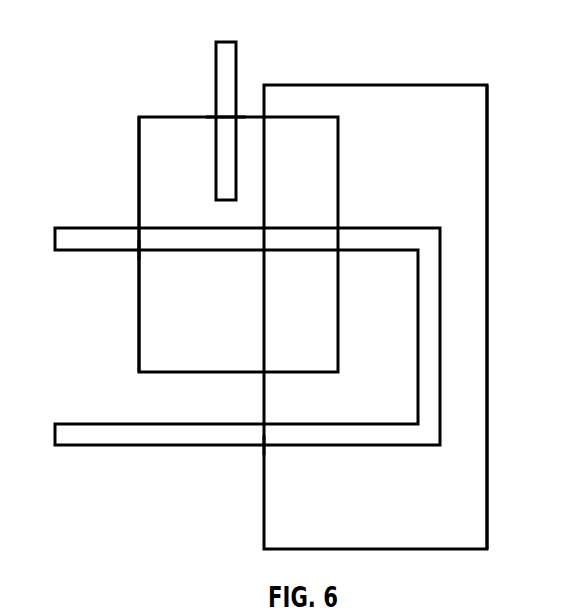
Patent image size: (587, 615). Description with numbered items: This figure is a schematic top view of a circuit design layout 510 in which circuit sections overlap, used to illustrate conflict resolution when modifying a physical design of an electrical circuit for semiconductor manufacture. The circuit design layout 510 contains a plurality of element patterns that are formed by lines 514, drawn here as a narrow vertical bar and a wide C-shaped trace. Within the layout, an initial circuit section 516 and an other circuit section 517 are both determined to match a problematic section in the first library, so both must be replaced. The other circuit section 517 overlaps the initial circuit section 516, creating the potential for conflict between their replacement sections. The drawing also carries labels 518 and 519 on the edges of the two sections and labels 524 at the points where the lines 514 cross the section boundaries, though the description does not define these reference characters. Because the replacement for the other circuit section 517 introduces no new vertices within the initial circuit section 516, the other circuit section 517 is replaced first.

The circuit design layout 510 is at (97, 48).
The lines 514 is at (237, 70).
The initial circuit section 516 is at (172, 116).
The other circuit section 517 is at (375, 84).
The edge of dielectric layer 518 is at (138, 168).
The edge of substrate 519 is at (488, 317).
The overlap junction 524 is at (213, 117).